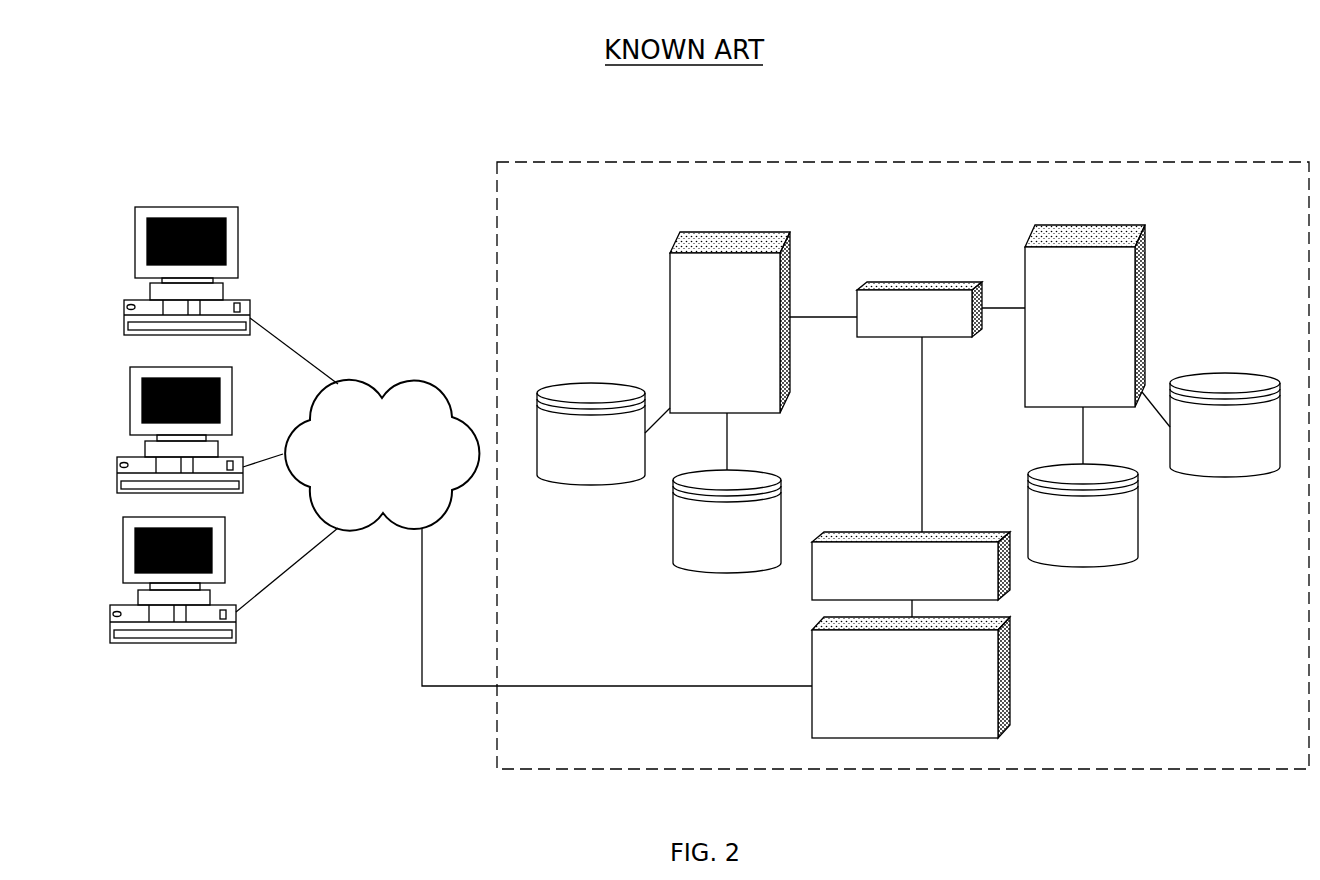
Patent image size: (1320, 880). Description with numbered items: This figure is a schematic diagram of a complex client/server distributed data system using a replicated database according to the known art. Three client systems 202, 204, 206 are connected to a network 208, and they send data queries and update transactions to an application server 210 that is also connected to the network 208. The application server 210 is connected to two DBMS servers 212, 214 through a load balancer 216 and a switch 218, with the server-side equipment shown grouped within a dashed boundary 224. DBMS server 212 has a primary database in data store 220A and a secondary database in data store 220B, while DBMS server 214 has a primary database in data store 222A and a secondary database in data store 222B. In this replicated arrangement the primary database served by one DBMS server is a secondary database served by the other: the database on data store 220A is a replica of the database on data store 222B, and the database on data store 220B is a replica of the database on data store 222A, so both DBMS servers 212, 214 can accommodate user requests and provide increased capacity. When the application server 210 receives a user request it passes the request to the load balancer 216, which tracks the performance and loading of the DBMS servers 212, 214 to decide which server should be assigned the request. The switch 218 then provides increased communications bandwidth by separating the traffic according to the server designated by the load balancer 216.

The client system 202 is at (130, 234).
The client system 204 is at (123, 400).
The client system 206 is at (118, 547).
The network 208 is at (370, 377).
The application server 210 is at (1024, 667).
The DBMS server 212 is at (658, 268).
The DBMS server 214 is at (1028, 227).
The load balancer 216 is at (887, 515).
The switch 218 is at (900, 278).
The data store 220A is at (575, 377).
The data store 220B is at (668, 557).
The data store 222A is at (1199, 367).
The data store 222B is at (1138, 520).
The server system 224 is at (492, 183).